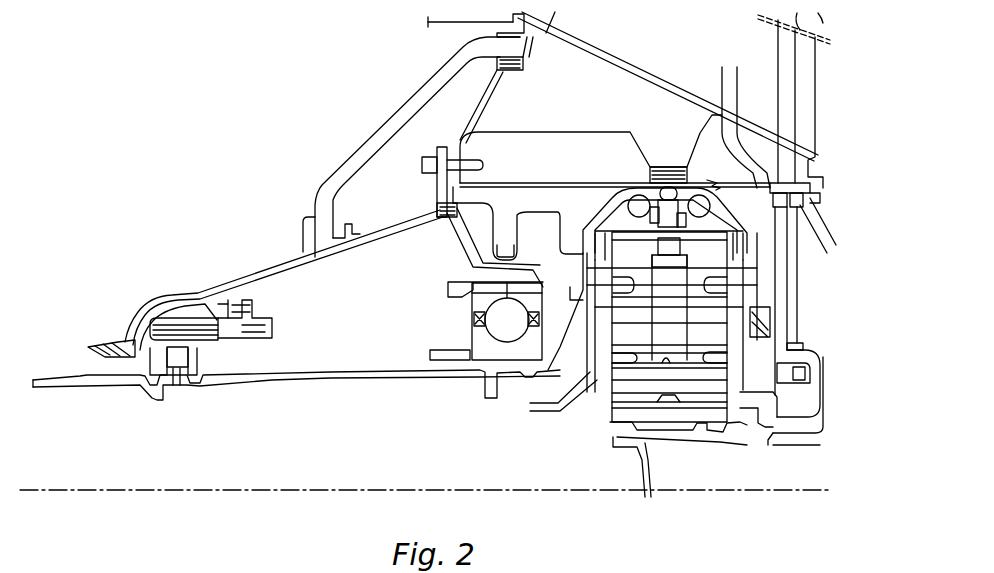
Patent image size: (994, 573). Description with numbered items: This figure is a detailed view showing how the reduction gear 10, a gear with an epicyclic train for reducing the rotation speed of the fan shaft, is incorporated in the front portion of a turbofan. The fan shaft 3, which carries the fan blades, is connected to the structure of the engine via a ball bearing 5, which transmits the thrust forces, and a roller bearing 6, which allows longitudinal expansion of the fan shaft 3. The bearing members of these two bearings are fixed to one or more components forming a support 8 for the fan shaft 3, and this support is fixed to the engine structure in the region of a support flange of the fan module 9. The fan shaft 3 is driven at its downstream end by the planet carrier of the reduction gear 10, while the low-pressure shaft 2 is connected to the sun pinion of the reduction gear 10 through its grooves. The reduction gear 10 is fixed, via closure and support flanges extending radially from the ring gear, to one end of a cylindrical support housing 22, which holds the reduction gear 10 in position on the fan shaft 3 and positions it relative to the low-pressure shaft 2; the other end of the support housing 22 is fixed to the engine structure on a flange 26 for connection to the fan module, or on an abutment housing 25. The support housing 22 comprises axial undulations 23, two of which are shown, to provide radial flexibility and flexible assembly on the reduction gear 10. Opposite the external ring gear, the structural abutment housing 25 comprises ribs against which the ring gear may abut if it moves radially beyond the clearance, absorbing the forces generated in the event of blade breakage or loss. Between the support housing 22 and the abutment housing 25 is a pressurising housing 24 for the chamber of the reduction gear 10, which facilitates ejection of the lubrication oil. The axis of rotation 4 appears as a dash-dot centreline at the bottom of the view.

The low-pressure shaft 2 is at (713, 447).
The fan shaft 3 is at (342, 373).
The axis of rotation 4 is at (205, 490).
The ball bearing 5 is at (475, 318).
The roller bearing 6 is at (195, 350).
The support 8 is at (457, 242).
The support flange of the fan module 9 is at (433, 180).
The reduction gear 10 is at (770, 305).
The support housing 22 is at (530, 208).
The axial undulations 23 is at (514, 260).
The pressurising housing 24 is at (503, 183).
The abutment housing 25 is at (607, 80).
The flange for connection to the fan module 26 is at (484, 90).